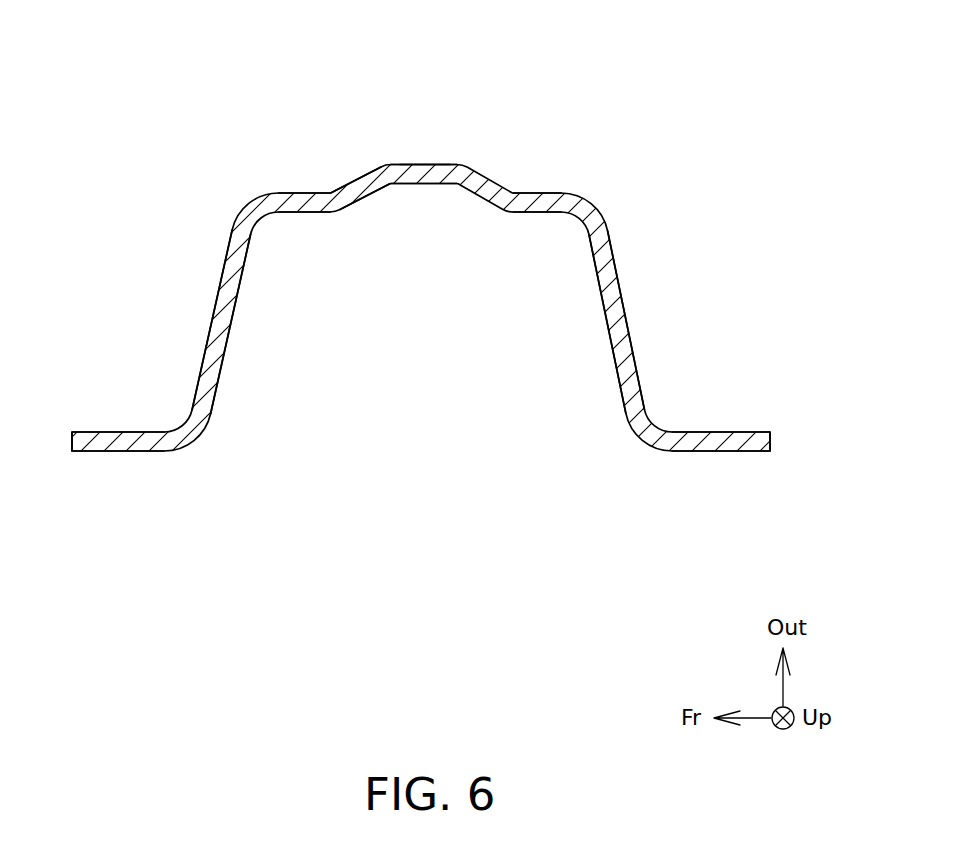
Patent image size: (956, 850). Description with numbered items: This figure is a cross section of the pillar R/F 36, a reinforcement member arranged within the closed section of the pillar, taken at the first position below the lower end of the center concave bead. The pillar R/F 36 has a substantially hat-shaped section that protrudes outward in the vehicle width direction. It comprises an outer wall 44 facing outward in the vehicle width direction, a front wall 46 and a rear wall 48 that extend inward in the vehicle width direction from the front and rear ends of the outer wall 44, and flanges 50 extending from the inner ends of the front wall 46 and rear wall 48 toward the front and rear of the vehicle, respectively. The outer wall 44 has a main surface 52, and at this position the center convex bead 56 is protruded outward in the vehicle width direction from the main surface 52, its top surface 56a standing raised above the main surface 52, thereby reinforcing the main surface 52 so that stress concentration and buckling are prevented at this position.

The pillar R/F 36 is at (648, 272).
The outer wall 44 is at (352, 160).
The front wall 46 is at (208, 321).
The rear wall 48 is at (630, 323).
The flanges 50 is at (160, 450).
The main surface 52 is at (288, 193).
The center convex bead 56 is at (427, 165).
The top surface 56a is at (454, 119).